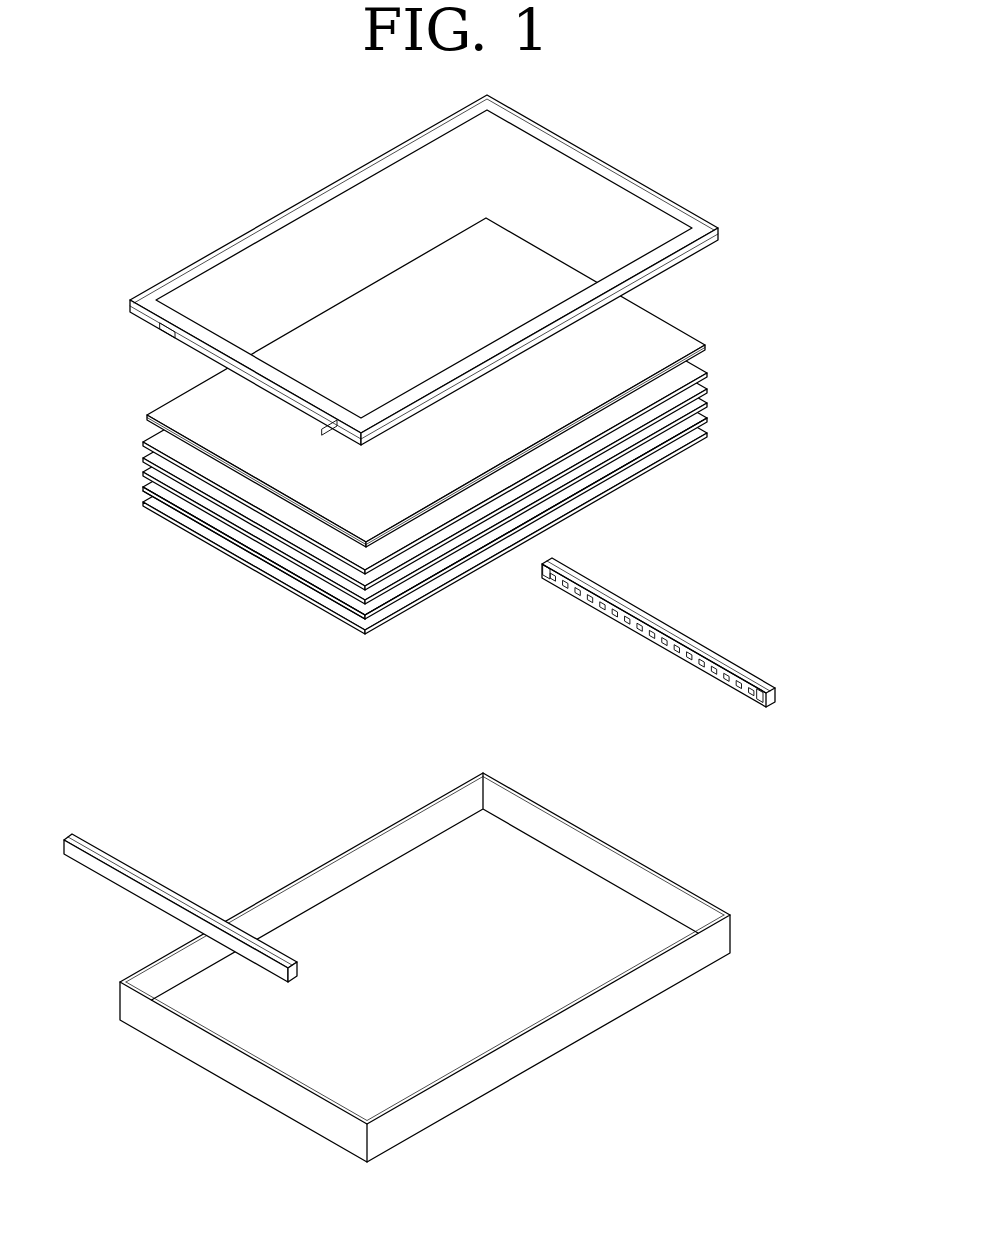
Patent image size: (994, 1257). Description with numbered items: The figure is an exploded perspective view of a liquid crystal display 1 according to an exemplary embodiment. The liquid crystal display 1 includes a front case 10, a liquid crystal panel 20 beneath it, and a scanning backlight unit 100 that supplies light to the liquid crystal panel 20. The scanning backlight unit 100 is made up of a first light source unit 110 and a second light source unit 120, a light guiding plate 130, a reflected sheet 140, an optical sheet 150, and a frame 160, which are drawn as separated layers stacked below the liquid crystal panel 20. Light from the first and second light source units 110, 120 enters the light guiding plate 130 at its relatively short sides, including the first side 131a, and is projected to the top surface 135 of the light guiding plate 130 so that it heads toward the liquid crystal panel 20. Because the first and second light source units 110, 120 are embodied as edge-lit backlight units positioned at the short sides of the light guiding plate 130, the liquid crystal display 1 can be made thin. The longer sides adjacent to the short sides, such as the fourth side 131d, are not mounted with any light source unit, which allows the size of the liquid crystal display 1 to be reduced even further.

The liquid crystal display 1 is at (240, 129).
The front case 10 is at (608, 163).
The liquid crystal panel 20 is at (685, 327).
The scanning backlight unit 100 is at (828, 1077).
The first light source unit 110 is at (115, 892).
The second light source unit 120 is at (660, 612).
The light guiding plate 130 is at (712, 418).
The first side 131a is at (168, 503).
The fourth side 131d is at (400, 595).
The top surface 135 is at (347, 595).
The reflected sheet 140 is at (708, 440).
The optical sheet 150 is at (712, 373).
The frame 160 is at (540, 1058).